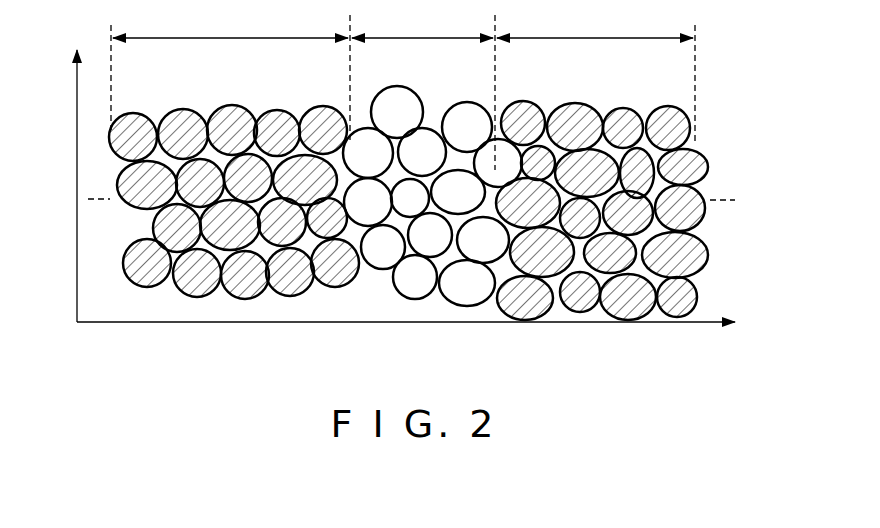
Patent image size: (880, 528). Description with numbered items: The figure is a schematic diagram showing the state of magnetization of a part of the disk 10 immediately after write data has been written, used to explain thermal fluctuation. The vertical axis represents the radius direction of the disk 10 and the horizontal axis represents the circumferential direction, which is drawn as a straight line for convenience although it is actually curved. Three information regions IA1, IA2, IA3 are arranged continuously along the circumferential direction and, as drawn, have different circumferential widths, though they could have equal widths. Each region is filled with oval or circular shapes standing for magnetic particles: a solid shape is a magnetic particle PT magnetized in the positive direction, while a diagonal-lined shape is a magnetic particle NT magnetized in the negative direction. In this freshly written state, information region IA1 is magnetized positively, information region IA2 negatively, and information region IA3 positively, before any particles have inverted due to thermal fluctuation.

The disk 10 is at (733, 56).
The magnetic particle magnetized in a negative direction NT is at (583, 118).
The magnetic particle magnetized in a positive direction PT is at (395, 108).
The information region IA1 is at (230, 76).
The information region IA2 is at (423, 91).
The information region IA3 is at (596, 79).